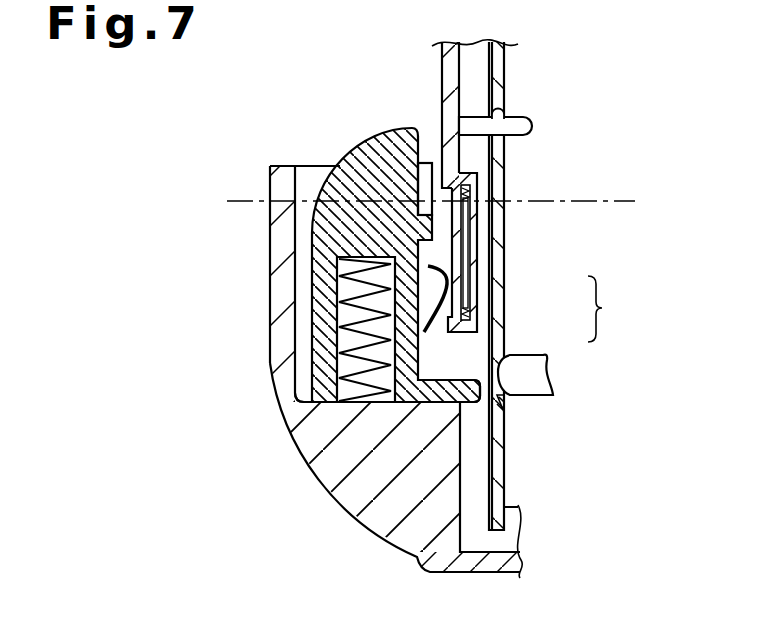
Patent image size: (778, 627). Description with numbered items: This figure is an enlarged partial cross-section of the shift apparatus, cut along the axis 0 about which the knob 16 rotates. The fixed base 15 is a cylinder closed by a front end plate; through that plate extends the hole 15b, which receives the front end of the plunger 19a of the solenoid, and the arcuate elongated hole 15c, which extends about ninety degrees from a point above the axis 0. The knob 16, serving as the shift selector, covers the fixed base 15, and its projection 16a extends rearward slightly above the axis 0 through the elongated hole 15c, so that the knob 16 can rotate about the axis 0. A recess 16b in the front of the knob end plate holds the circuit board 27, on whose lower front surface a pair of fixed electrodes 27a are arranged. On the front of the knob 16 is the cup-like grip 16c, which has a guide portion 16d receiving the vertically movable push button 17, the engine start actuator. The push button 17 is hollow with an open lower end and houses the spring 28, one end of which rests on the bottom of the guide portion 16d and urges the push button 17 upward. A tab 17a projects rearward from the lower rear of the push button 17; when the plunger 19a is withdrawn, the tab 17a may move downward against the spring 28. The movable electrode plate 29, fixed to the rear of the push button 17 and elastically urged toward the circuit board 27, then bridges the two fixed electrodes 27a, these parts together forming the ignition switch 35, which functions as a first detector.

The axis 0 is at (443, 195).
The fixed base 15 is at (503, 480).
The hole 15b is at (502, 397).
The arcuate elongated hole 15c is at (507, 121).
The knob 16 is at (447, 67).
The projection 16a is at (533, 127).
The recess 16b is at (467, 220).
The grip 16c is at (357, 502).
The guide portion 16d is at (278, 235).
The push button 17 is at (350, 158).
The tab 17a is at (458, 416).
The plunger 19a is at (528, 395).
The circuit board 27 is at (460, 248).
The fixed electrodes 27a is at (458, 288).
The spring 28 is at (300, 408).
The movable electrode plate 29 is at (420, 338).
The ignition switch 35 is at (616, 309).